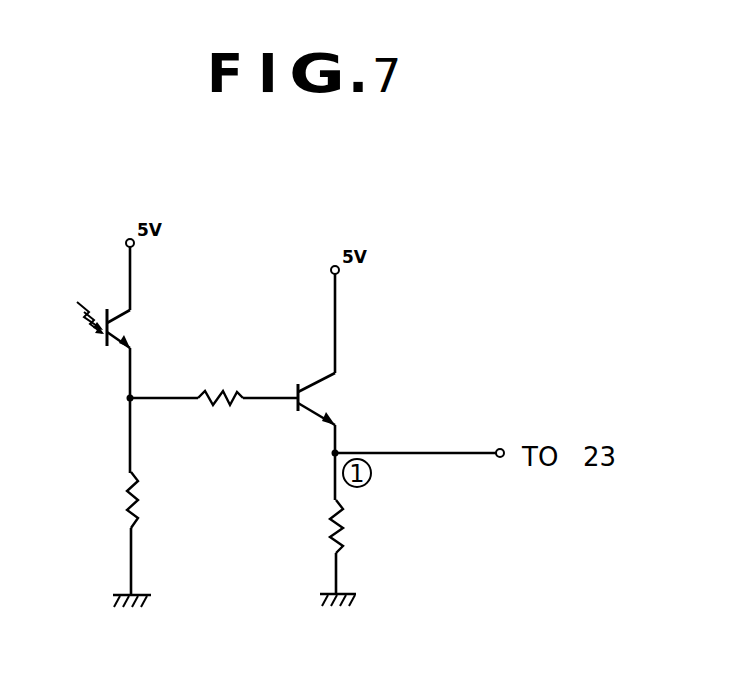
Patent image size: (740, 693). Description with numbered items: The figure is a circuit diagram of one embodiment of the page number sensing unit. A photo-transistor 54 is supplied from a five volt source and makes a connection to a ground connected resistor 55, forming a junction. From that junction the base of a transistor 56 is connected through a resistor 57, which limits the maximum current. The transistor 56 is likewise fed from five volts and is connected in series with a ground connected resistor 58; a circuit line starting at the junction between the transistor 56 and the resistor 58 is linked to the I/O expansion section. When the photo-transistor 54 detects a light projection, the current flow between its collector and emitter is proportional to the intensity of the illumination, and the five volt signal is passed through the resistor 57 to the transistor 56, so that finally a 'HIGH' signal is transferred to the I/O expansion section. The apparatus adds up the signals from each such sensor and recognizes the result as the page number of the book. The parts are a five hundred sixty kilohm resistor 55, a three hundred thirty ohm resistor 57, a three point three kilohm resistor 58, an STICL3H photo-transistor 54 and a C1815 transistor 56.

The photo-transistor 54 is at (161, 297).
The resistor 55 is at (190, 493).
The transistor 56 is at (386, 355).
The resistor 57 is at (227, 386).
The resistor 58 is at (353, 522).